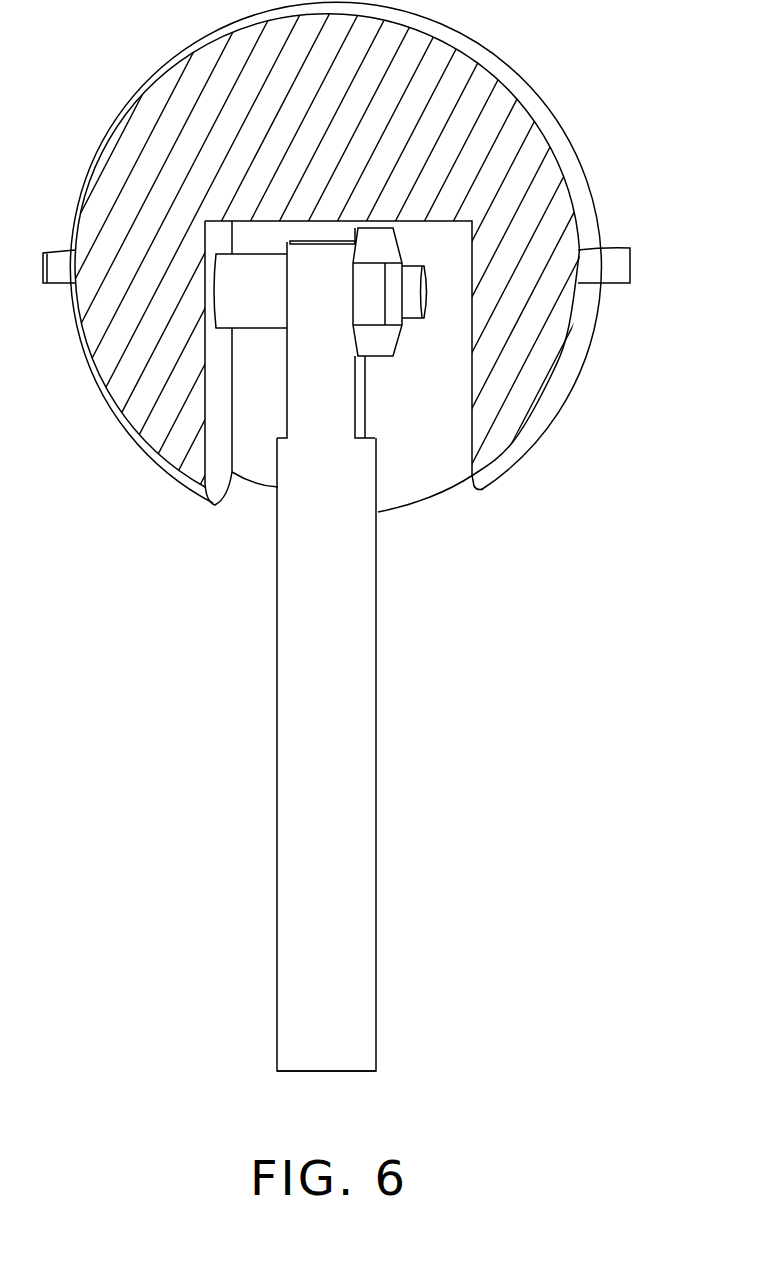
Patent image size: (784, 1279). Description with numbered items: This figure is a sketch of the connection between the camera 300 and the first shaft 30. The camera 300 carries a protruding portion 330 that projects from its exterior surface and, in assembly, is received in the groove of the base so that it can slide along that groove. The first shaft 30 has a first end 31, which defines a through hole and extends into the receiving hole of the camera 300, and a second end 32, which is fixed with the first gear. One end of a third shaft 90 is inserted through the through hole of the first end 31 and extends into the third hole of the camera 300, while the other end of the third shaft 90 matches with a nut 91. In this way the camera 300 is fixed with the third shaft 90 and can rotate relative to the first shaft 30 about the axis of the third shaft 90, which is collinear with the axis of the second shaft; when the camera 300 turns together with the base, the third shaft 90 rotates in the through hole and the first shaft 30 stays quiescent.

The camera 300 is at (523, 77).
The protruding portion 330 is at (622, 267).
The third shaft 90 is at (241, 295).
The first end 31 is at (302, 345).
The nut 91 is at (368, 310).
The first shaft 30 is at (376, 807).
The second end 32 is at (318, 1057).